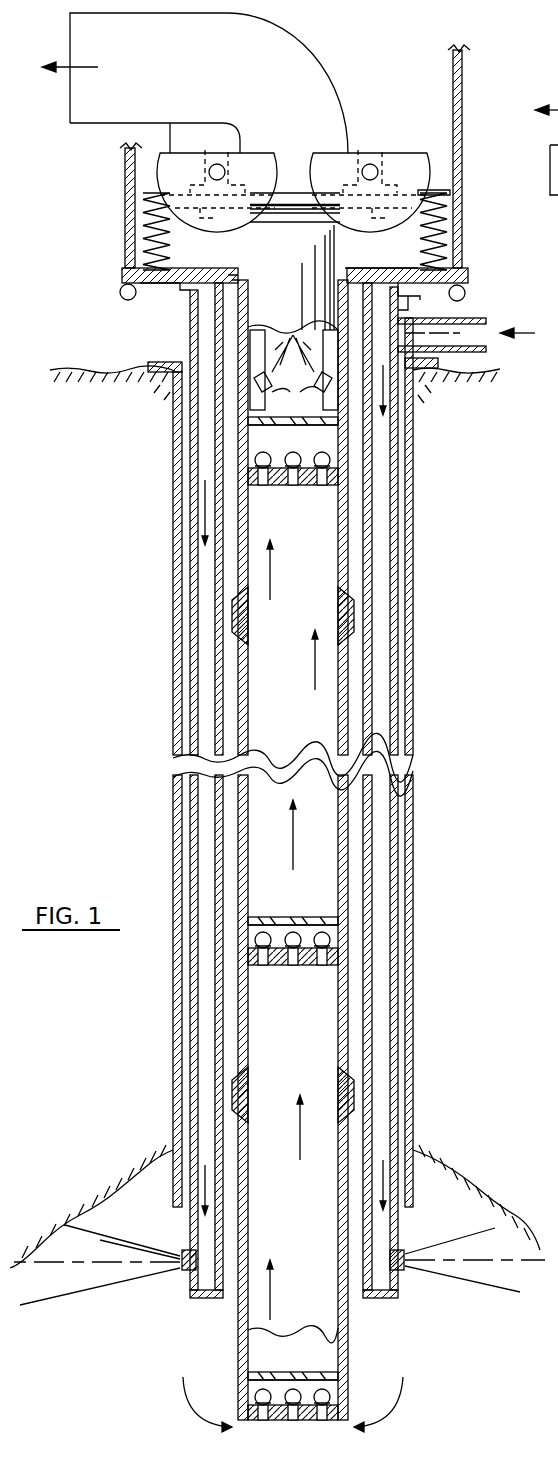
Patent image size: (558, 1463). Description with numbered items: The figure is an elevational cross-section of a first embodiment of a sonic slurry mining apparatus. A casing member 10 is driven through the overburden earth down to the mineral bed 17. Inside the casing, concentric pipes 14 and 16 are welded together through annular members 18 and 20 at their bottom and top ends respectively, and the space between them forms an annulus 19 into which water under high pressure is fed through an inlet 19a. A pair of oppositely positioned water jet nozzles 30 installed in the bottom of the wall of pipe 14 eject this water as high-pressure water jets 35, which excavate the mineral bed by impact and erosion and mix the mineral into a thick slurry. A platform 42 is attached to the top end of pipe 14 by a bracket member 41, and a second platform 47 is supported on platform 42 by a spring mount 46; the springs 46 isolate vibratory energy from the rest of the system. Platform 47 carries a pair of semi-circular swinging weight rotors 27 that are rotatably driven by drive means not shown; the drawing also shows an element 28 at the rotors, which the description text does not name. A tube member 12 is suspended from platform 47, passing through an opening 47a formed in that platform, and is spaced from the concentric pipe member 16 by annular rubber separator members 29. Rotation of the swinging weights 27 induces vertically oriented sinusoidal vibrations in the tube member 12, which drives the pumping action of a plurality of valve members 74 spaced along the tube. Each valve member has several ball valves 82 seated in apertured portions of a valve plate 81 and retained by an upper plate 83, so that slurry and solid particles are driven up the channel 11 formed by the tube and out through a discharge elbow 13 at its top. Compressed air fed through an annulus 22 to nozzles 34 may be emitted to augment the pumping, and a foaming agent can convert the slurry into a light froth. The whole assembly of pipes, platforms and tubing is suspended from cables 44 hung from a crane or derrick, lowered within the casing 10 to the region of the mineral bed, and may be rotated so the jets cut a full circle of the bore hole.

The casing member 10 is at (178, 600).
The channel 11 is at (294, 842).
The tube member 12 is at (348, 547).
The discharge elbow 13 is at (300, 62).
The pipe 14 is at (200, 694).
The concentric pipe member 16 is at (222, 730).
The mineral bed 17 is at (462, 1176).
The annular member 18 is at (378, 1300).
The annulus 19 is at (395, 446).
The inlet 19a is at (480, 318).
The annular member 20 is at (207, 283).
The annulus 22 is at (255, 343).
The swinging weight rotors 27 is at (170, 123).
The roller axle 28 is at (212, 162).
The annular rubber separator members 29 is at (240, 641).
The water jet nozzles 30 is at (180, 1255).
The nozzles 34 is at (295, 403).
The water jets 35 is at (85, 1273).
The bracket member 41 is at (423, 300).
The platform 42 is at (122, 275).
The cables 44 is at (125, 162).
The spring mount 46 is at (145, 238).
The platform 47 is at (432, 200).
The opening 47a is at (350, 270).
The valve members 74 is at (262, 438).
The valve plate 81 is at (287, 482).
The ball valves 82 is at (322, 484).
The upper plate 83 is at (280, 442).